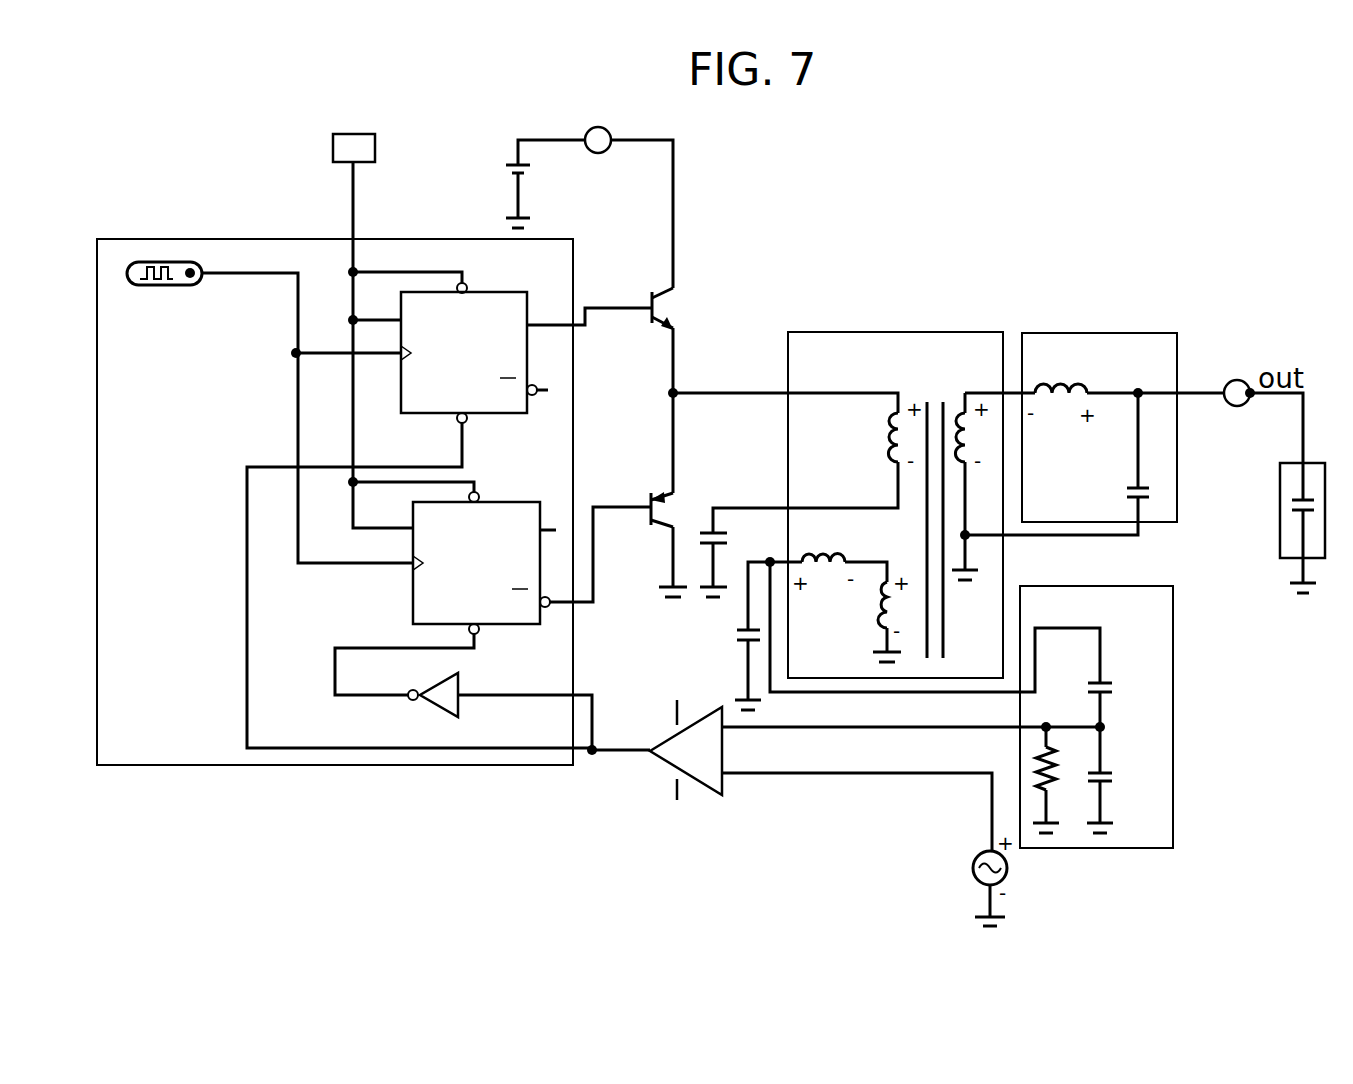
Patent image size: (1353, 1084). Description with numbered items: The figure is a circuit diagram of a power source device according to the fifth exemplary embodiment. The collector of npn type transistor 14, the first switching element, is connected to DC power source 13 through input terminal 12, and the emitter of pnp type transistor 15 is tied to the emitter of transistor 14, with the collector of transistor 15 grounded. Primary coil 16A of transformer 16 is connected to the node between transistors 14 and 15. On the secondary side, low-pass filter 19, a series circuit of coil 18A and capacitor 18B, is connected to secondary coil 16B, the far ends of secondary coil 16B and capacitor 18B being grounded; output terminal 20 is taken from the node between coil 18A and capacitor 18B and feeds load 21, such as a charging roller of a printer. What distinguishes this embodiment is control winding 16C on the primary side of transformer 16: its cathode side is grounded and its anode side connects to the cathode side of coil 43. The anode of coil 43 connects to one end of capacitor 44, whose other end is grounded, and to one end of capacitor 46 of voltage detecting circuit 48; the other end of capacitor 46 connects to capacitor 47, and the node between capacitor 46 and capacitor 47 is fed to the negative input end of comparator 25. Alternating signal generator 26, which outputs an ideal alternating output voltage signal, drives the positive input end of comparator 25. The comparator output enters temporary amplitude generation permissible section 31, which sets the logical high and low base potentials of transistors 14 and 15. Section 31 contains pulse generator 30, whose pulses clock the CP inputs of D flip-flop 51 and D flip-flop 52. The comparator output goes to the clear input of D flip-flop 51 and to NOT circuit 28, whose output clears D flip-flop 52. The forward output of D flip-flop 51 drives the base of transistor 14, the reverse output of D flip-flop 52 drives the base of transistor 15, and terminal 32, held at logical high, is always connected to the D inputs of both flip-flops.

The input terminal 12 is at (599, 153).
The DC power source 13 is at (503, 171).
The npn type transistor 14 is at (670, 303).
The pnp type transistor 15 is at (670, 503).
The transformer 16 is at (980, 332).
The primary coil 16A is at (890, 413).
The secondary coil 16B is at (958, 408).
The control winding 16C is at (868, 605).
The coil 18A is at (1062, 377).
The capacitor 18B is at (1157, 492).
The low-pass filter 19 is at (1118, 333).
The output terminal 20 is at (1242, 380).
The load 21 is at (1280, 527).
The comparator 25 is at (668, 763).
The alternating signal generator 26 is at (968, 866).
The NOT circuit 28 is at (437, 708).
The pulse generator 30 is at (167, 287).
The temporary amplitude generation permissible section 31 is at (175, 235).
The terminal 32 is at (332, 147).
The coil 43 is at (832, 547).
The capacitor 44 is at (735, 635).
The capacitor 46 is at (1118, 677).
The capacitor 47 is at (1118, 777).
The voltage detecting circuit 48 is at (1177, 707).
The D flip-flop 51 is at (485, 290).
The D flip-flop 52 is at (492, 500).